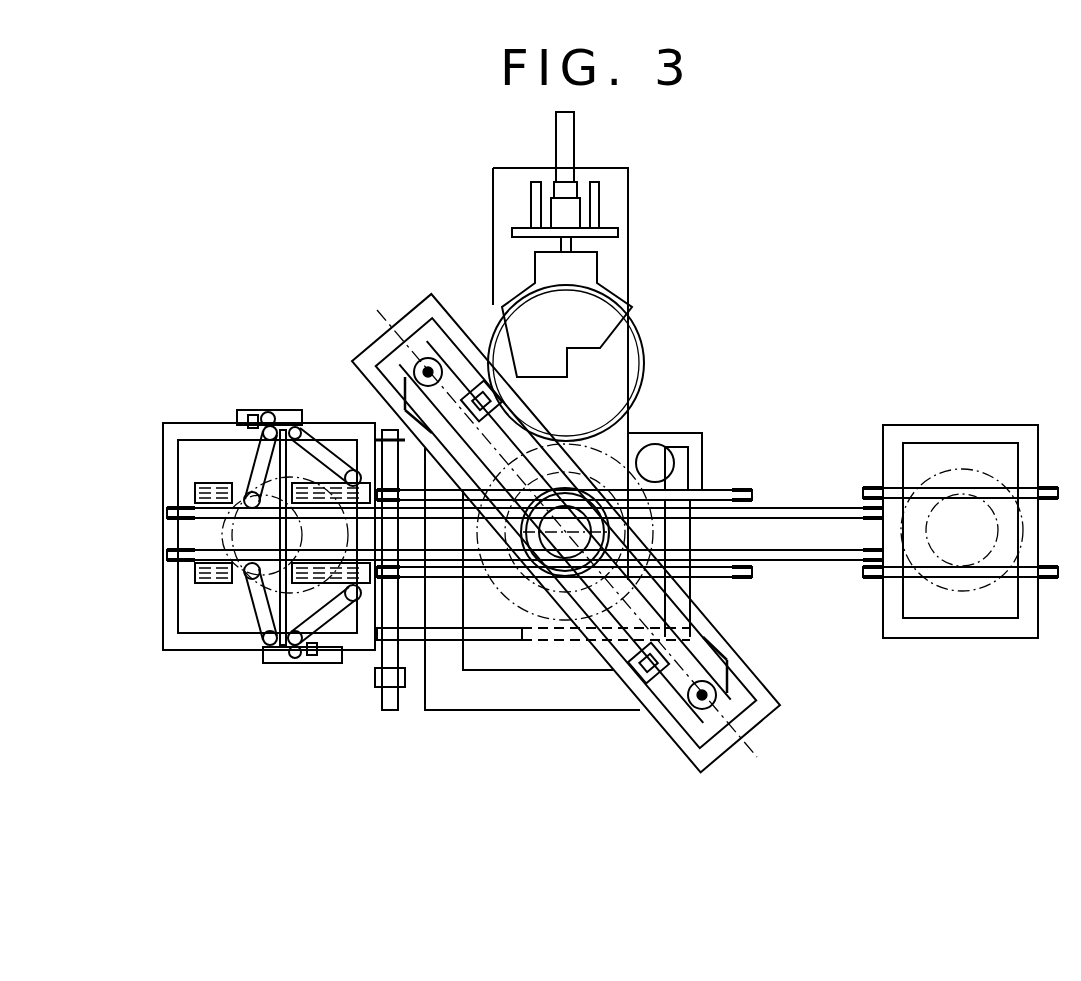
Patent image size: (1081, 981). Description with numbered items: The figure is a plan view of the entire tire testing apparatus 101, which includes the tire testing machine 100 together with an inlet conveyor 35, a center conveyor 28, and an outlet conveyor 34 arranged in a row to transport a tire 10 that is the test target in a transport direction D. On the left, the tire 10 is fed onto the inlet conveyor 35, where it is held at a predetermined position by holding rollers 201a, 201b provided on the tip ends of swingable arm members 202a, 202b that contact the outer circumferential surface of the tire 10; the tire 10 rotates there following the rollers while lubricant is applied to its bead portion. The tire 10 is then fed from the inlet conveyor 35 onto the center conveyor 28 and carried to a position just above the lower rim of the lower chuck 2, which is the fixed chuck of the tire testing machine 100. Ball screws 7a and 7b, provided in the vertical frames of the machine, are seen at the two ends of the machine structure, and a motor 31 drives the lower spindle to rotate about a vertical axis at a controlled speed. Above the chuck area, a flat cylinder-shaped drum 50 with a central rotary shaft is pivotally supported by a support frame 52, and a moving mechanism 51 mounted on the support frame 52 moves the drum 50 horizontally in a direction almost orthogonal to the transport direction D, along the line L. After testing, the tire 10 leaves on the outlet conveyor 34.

The tire testing machine 100 is at (205, 303).
The tire testing apparatus 101 is at (906, 195).
The lower chuck 2 is at (545, 590).
The ball screw 7a is at (430, 365).
The ball screw 7b is at (700, 702).
The tire 10 is at (962, 470).
The center conveyor 28 is at (488, 667).
The motor 31 is at (655, 458).
The outlet conveyor 34 is at (961, 669).
The inlet conveyor 35 is at (248, 677).
The drum 50 is at (662, 344).
The moving mechanism 51 is at (572, 127).
The support frame 52 is at (585, 268).
The holding roller 201a is at (355, 602).
The holding roller 201b is at (355, 470).
The swingable arm member 202a is at (310, 654).
The swingable arm member 202b is at (287, 425).
The transport direction D is at (403, 529).
The axis L is at (578, 548).